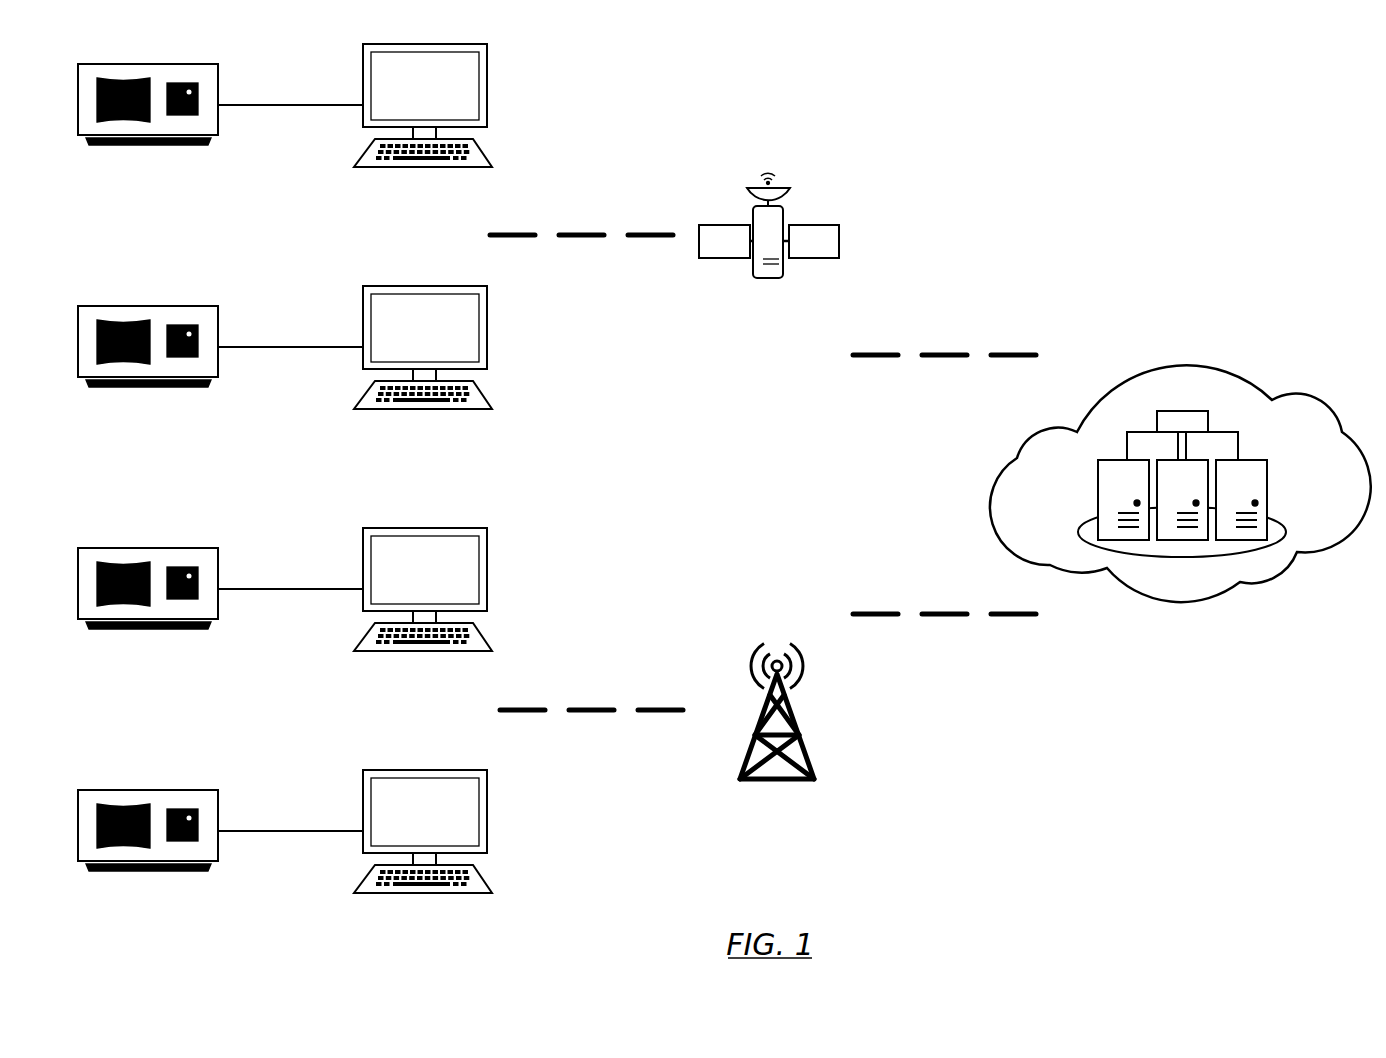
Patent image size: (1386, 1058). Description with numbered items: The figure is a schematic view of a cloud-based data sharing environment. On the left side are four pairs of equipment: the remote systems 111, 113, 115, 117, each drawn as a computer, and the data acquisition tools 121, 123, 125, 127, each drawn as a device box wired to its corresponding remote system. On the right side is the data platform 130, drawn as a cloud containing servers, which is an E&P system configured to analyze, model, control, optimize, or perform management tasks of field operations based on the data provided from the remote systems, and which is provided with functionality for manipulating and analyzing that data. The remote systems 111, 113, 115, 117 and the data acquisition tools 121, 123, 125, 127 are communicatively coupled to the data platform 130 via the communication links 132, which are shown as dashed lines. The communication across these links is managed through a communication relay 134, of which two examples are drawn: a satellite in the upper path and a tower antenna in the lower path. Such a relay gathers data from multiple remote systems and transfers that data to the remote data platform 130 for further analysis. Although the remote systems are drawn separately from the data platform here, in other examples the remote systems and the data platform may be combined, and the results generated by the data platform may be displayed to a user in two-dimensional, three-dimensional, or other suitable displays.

The remote system 111 is at (404, 206).
The remote system 113 is at (404, 448).
The remote system 115 is at (404, 690).
The remote system 117 is at (404, 932).
The data acquisition tool 121 is at (129, 206).
The data acquisition tool 123 is at (129, 448).
The data acquisition tool 125 is at (129, 690).
The data acquisition tool 127 is at (129, 932).
The data platform 130 is at (1164, 647).
The communication links 132 is at (560, 271).
The communication relay 134 is at (749, 327).